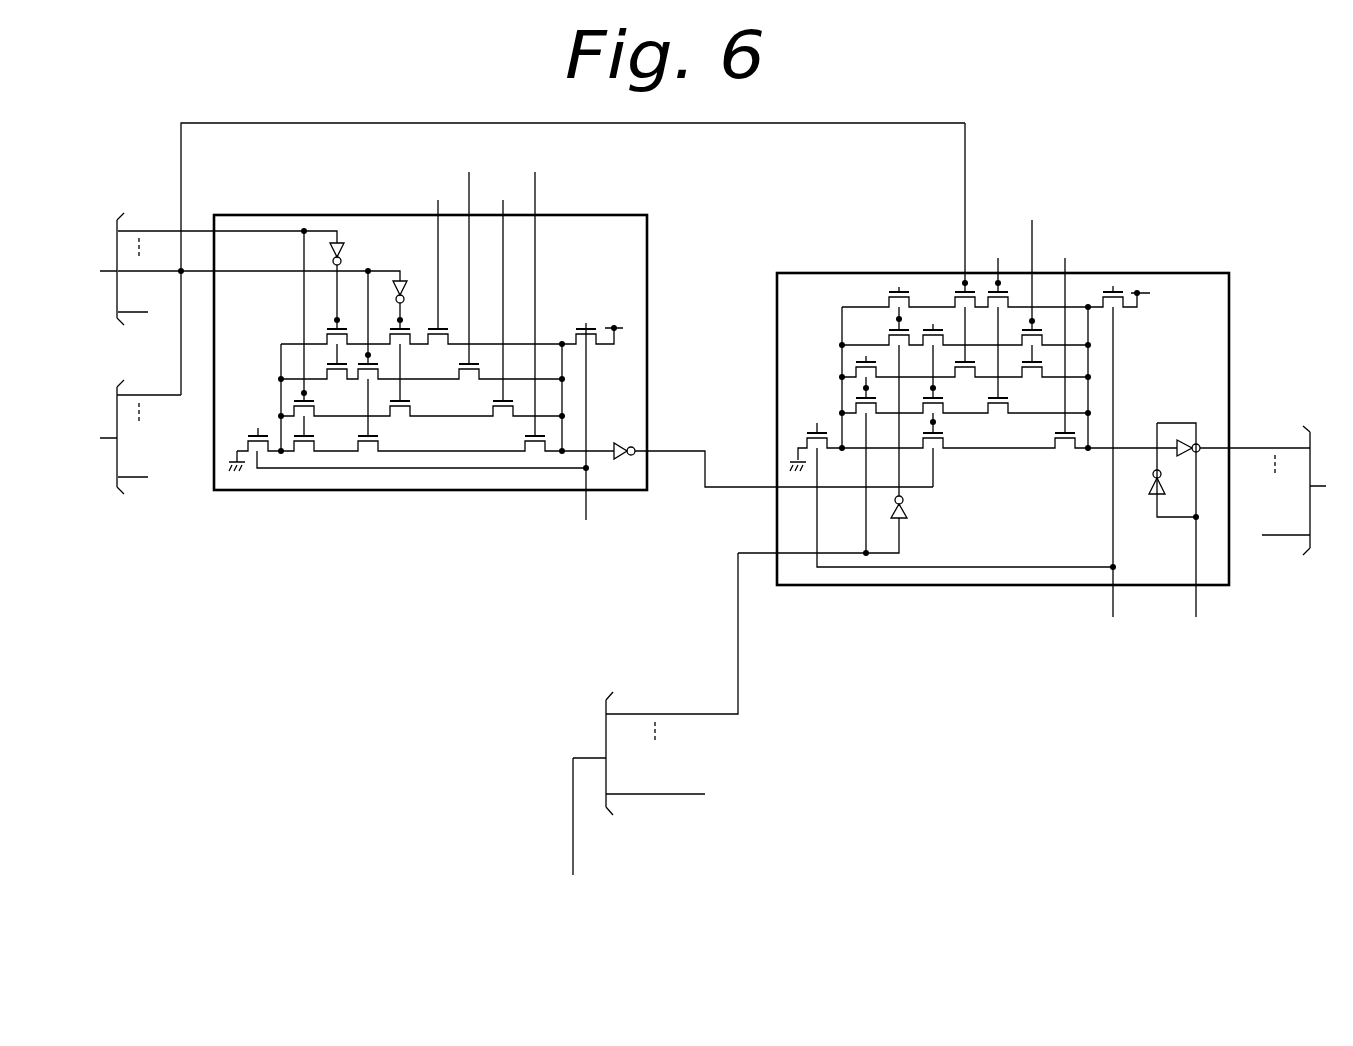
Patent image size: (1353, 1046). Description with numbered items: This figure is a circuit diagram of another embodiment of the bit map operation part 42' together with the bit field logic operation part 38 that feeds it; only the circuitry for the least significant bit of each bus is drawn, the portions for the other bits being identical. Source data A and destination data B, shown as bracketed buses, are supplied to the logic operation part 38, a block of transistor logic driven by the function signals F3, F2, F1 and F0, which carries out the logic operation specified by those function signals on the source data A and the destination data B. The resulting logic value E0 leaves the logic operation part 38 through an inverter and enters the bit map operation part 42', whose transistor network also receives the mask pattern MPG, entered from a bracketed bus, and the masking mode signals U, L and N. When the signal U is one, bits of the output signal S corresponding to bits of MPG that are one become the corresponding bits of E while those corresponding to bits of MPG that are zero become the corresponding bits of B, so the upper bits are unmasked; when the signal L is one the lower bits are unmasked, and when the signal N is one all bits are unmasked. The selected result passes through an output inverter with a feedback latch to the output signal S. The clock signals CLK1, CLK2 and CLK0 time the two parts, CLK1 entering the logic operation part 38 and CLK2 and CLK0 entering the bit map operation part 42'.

The bit field logic operation part 38 is at (632, 215).
The bit map operation part 42' is at (1043, 354).
The source data A is at (120, 264).
The destination data B is at (124, 429).
The output signal S is at (1307, 485).
The mask pattern MPG is at (657, 734).
The resulting logic value E0 is at (784, 452).
The clock signal CLK1 is at (628, 538).
The clock signal CLK2 is at (1147, 639).
The clock signal CLK0 is at (1220, 596).
The function signal F3 is at (438, 250).
The function signal F2 is at (469, 251).
The function signal F1 is at (504, 286).
The function signal F0 is at (534, 287).
The masking mode signal U is at (996, 311).
The masking mode signal L is at (1028, 274).
The masking mode signal N is at (1064, 328).